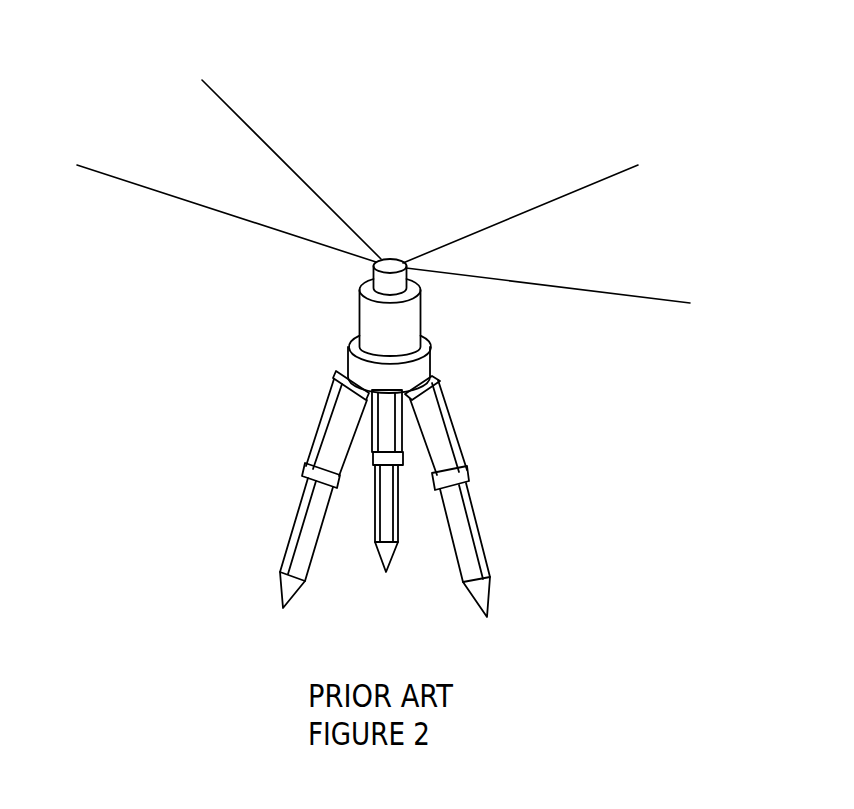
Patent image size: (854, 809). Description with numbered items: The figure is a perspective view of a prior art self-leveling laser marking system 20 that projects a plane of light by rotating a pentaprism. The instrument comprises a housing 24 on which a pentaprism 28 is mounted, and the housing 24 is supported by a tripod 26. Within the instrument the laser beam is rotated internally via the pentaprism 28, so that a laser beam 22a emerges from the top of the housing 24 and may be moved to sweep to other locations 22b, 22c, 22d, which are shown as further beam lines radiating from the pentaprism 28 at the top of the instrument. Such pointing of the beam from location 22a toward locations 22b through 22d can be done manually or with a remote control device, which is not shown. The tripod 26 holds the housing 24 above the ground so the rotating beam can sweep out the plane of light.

The laser marking system 20 is at (459, 79).
The laser beam 22a is at (130, 182).
The laser beam location 22b is at (253, 130).
The laser beam location 22c is at (557, 200).
The laser beam location 22d is at (597, 292).
The housing 24 is at (428, 343).
The tripod 26 is at (452, 421).
The pentaprism 28 is at (407, 263).